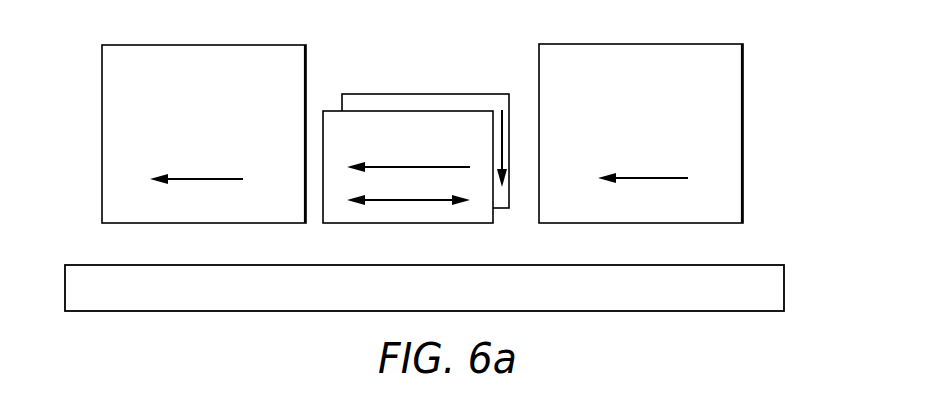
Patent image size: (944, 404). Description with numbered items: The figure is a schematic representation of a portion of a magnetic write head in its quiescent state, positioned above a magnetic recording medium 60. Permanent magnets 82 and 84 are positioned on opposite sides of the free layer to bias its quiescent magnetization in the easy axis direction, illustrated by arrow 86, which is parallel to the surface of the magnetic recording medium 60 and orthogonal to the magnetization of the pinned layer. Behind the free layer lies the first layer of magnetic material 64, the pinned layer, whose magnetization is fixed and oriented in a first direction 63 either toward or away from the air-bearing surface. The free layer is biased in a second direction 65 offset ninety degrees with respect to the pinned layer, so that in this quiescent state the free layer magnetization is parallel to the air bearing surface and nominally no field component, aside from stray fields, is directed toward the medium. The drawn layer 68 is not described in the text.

The magnetic recording medium 60 is at (772, 288).
The first direction 63 is at (505, 145).
The first layer of magnetic material 64 is at (459, 100).
The second direction 65 is at (387, 163).
The layer 68 is at (333, 125).
The permanent magnet 82 is at (110, 99).
The permanent magnet 84 is at (730, 98).
The arrow 86 is at (407, 202).